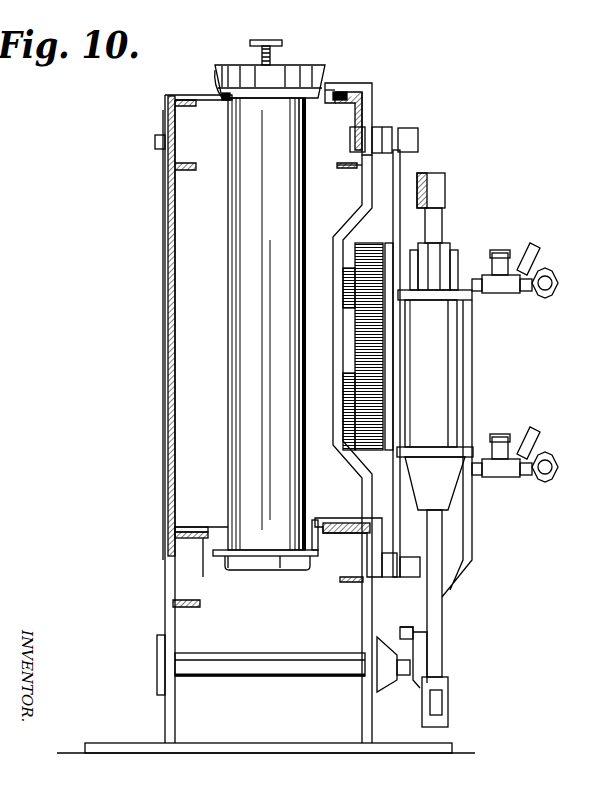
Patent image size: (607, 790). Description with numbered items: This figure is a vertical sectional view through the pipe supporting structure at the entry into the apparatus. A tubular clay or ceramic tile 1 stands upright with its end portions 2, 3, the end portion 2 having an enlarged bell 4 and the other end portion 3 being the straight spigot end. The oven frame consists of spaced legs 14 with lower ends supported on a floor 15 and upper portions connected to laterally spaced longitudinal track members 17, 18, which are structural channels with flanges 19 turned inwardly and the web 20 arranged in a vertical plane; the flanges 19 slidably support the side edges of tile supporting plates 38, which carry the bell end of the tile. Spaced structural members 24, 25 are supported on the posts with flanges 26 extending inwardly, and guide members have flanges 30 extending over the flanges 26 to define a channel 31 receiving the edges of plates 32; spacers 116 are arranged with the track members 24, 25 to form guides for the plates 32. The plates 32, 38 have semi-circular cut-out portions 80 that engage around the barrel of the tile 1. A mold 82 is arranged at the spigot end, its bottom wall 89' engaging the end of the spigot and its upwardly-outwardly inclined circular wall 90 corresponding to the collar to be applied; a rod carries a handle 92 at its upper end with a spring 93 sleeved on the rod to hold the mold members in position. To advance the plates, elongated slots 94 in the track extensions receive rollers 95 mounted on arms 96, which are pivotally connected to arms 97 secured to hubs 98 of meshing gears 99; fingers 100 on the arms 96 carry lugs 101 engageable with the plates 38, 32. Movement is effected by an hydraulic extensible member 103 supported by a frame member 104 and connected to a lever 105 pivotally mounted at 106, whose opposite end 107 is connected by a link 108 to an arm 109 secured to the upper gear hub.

The tubular clay or ceramic tile 1 is at (231, 284).
The end portion 2 is at (327, 83).
The end portion 3 is at (271, 546).
The enlarged bell 4 is at (215, 78).
The legs 14 is at (338, 433).
The floor 15 is at (86, 750).
The longitudinal track member 17 is at (183, 168).
The longitudinal track member 18 is at (352, 167).
The flanges 19 is at (189, 106).
The web 20 is at (354, 116).
The structural member 24 is at (180, 545).
The structural member 25 is at (350, 545).
The flanges 26 is at (203, 545).
The flanges 30 is at (188, 527).
The channel 31 is at (205, 527).
The plates 32 is at (317, 519).
The tile supporting plates 38 is at (224, 101).
The semi-circular cut-out portions 80 is at (230, 96).
The mold 82 is at (316, 556).
The bottom wall 89' is at (291, 574).
The circular wall 90 is at (226, 560).
The handle 92 is at (282, 43).
The spring 93 is at (270, 58).
The elongated slots 94 is at (366, 129).
The rollers 95 is at (345, 150).
The arms 96 is at (390, 128).
The arms 97 is at (400, 168).
The hubs 98 is at (388, 245).
The meshing gears 99 is at (360, 352).
The fingers 100 is at (374, 88).
The lugs 101 is at (331, 100).
The hydraulic extensible member 103 is at (455, 330).
The frame member 104 is at (440, 172).
The lever 105 is at (420, 690).
The pivot 106 is at (387, 642).
The opposite end 107 is at (412, 628).
The link 108 is at (476, 564).
The arm 109 is at (406, 250).
The spacers 116 is at (172, 540).